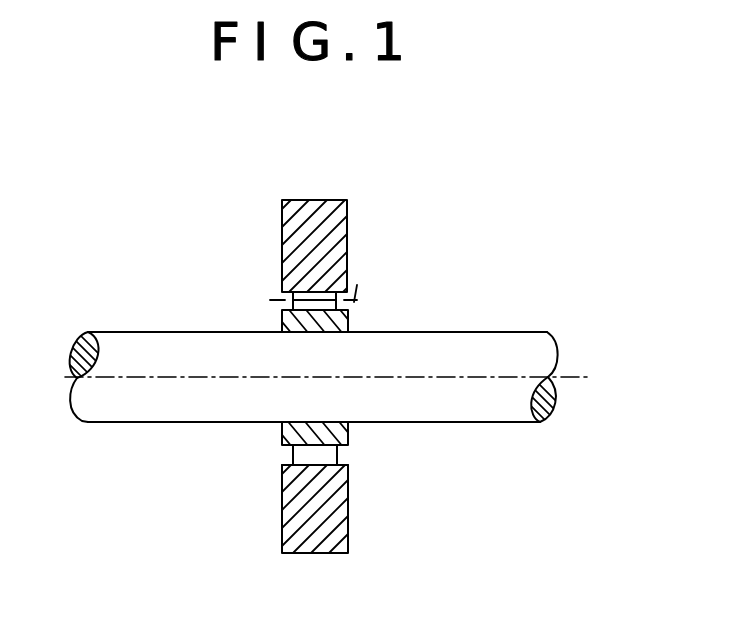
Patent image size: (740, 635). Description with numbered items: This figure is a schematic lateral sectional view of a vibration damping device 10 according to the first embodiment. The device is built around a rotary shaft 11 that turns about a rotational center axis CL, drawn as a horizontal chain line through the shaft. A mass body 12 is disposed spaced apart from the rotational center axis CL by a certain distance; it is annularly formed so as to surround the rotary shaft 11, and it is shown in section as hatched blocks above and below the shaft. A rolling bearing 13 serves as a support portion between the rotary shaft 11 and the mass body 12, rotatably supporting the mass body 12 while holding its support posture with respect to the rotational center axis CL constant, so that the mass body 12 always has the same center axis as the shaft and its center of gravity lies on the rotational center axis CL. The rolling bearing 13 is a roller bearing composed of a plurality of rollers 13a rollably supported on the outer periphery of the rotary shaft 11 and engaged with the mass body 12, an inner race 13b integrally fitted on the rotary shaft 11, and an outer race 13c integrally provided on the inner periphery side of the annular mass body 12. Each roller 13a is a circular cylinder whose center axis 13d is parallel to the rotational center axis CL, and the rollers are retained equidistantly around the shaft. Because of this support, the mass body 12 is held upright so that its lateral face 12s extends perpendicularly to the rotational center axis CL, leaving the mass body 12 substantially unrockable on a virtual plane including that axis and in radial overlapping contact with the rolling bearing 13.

The vibration damping device 10 is at (478, 225).
The rotary shaft 11 is at (465, 332).
The mass body 12 is at (333, 198).
The lateral face 12s is at (348, 537).
The rolling bearing 13 is at (238, 289).
The rollers 13a is at (337, 452).
The inner race 13b is at (348, 432).
The outer race 13c is at (348, 466).
The center axis 13d is at (362, 283).
The rotational center axis CL is at (578, 377).